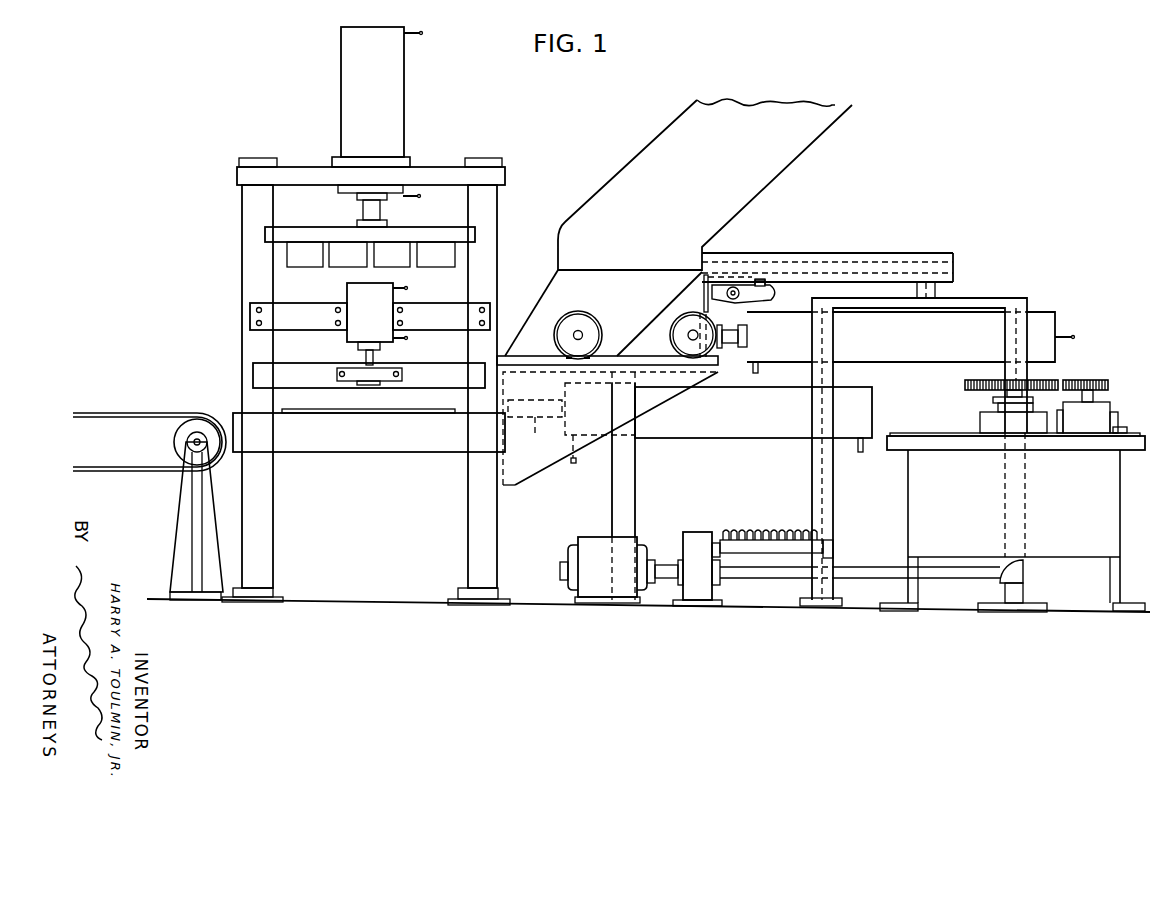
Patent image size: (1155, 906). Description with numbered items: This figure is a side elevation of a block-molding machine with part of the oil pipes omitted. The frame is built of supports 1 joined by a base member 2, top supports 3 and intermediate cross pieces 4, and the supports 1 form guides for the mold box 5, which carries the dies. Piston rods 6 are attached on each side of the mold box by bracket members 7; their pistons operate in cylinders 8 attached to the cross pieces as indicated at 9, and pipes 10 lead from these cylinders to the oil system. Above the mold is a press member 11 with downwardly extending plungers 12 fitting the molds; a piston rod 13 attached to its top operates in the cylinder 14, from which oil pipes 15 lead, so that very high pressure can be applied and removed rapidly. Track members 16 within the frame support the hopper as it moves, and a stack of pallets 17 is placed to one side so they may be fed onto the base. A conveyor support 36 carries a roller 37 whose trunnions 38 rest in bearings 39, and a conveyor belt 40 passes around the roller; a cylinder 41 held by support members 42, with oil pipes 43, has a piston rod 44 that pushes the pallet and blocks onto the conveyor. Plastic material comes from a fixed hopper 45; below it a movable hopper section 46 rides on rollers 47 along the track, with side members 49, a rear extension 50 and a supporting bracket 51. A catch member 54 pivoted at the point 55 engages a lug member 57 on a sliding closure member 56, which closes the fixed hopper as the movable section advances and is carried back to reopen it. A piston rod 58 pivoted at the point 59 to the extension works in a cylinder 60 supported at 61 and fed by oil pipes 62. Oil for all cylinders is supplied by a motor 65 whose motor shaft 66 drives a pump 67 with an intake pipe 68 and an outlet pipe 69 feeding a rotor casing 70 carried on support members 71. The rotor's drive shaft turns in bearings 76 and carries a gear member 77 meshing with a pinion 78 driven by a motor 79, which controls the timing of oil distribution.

The frame or supports 1 is at (262, 515).
The base member 2 is at (313, 452).
The top supports 3 is at (237, 174).
The intermediate cross pieces 4 is at (250, 313).
The mold box 5 is at (263, 370).
The piston rods 6 is at (366, 358).
The bracket members 7 is at (354, 381).
The cylinders 8 is at (347, 290).
The attachment of cylinders 9 is at (330, 316).
The pipes 10 is at (400, 290).
The press member 11 is at (265, 232).
The plungers 12 is at (304, 262).
The piston rod 13 is at (363, 210).
The cylinder 14 is at (341, 72).
The oil pipes 15 is at (419, 36).
The track members 16 is at (503, 355).
The pallets 17 is at (424, 412).
The support 36 is at (178, 519).
The roller 37 is at (174, 434).
The trunnions 38 is at (195, 438).
The bearings 39 is at (205, 435).
The conveyor belt 40 is at (125, 410).
The cylinder 41 is at (728, 438).
The support members 42 is at (637, 477).
The oil pipes 43 is at (861, 454).
The piston rod 44 is at (571, 419).
The hopper 45 is at (650, 153).
The movable section of the hopper 46 is at (551, 291).
The rollers 47 is at (587, 318).
The side members 49 is at (672, 304).
The extension 50 is at (704, 305).
The bracket 51 is at (536, 478).
The catch member 54 is at (776, 291).
The pivot point 55 is at (733, 299).
The sliding closure member 56 is at (808, 266).
The lug member 57 is at (766, 279).
The piston rod 58 is at (731, 348).
The pivot point 59 is at (682, 344).
The cylinder 60 is at (910, 362).
The support 61 is at (1030, 321).
The oil pipes 62 is at (1068, 335).
The motor 65 is at (591, 542).
The motor shaft 66 is at (665, 564).
The pump 67 is at (697, 532).
The intake pipe 68 is at (795, 556).
The outlet pipe 69 is at (748, 580).
The rotor casing 70 is at (908, 491).
The support members 71 is at (919, 594).
The bearings 76 is at (992, 401).
The gear member 77 is at (965, 389).
The pinion 78 is at (1110, 387).
The motor 79 is at (1110, 418).